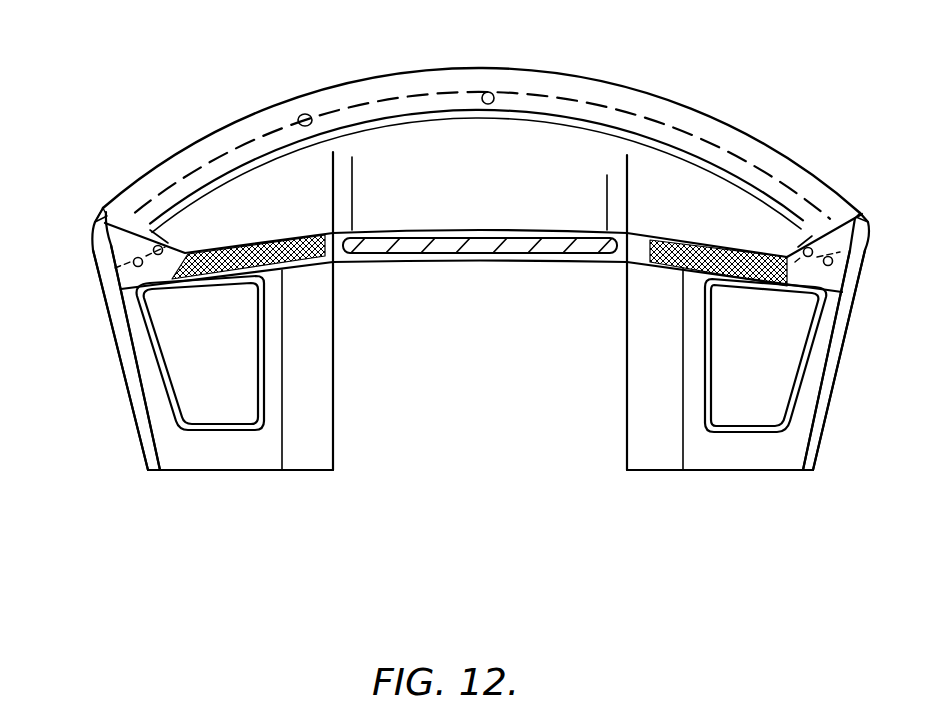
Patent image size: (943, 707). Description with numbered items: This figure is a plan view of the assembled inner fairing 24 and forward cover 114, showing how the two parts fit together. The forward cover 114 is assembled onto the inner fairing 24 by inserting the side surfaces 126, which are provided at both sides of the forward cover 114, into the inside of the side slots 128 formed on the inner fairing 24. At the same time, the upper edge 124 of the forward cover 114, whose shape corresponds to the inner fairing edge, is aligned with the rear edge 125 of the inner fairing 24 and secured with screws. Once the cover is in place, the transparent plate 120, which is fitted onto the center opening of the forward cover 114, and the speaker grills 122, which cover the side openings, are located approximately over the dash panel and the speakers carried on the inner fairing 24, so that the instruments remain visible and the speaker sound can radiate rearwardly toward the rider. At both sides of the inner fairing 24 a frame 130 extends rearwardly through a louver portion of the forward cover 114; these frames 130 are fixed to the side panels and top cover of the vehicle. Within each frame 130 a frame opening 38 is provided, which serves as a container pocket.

The inner fairing 24 is at (665, 106).
The forward cover 114 is at (438, 150).
The upper edge 124 is at (490, 97).
The rear edge 125 is at (309, 118).
The side surfaces 126 is at (162, 268).
The side slots 128 is at (115, 232).
The speaker grill 122 is at (228, 277).
The transparent plate 120 is at (463, 255).
The frame opening 38 is at (222, 400).
The frame 130 is at (172, 448).